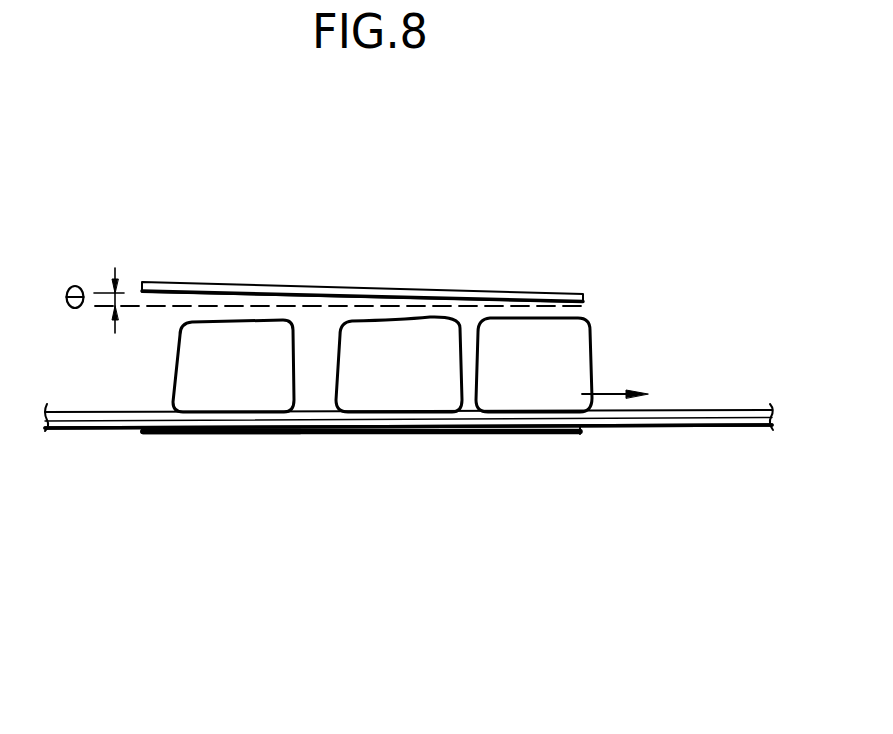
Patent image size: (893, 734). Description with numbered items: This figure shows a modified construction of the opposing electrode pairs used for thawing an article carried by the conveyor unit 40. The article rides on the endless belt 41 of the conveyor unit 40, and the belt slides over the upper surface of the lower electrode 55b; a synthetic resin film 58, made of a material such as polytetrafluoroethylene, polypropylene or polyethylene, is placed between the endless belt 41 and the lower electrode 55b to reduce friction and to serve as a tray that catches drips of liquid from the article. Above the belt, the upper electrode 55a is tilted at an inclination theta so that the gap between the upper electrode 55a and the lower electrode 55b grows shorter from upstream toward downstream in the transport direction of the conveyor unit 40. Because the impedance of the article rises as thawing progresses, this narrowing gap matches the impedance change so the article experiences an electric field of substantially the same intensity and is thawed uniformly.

The upper electrode 55a is at (440, 291).
The lower electrode 55b is at (528, 435).
The synthetic resin film 58 is at (130, 428).
The endless belt 41 is at (683, 410).
The conveyor unit 40 is at (733, 436).